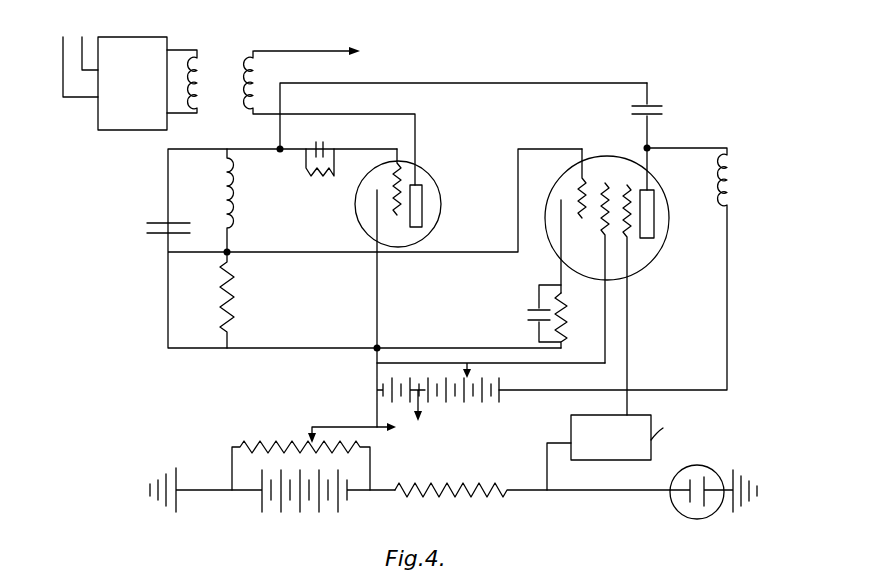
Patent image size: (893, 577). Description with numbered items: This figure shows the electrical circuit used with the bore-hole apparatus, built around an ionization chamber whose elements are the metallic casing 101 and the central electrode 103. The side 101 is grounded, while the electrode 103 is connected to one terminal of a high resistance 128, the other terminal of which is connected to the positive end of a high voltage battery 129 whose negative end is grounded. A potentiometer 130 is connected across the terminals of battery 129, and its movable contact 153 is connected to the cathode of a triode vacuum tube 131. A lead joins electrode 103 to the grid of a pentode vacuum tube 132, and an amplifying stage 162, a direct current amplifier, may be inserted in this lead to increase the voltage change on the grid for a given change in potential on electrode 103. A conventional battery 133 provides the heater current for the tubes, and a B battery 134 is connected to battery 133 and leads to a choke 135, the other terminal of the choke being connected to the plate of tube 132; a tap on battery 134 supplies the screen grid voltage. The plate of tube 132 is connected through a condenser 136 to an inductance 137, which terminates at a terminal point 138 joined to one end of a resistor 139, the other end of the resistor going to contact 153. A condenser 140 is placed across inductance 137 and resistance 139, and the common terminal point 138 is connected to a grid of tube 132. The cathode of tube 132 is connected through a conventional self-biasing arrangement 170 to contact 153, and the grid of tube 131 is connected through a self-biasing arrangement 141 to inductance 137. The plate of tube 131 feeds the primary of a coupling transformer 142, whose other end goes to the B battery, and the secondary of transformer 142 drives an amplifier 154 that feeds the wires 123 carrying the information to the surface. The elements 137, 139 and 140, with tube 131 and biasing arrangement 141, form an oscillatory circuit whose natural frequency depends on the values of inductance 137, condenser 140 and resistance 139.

The wires 123 is at (78, 51).
The amplifier 154 is at (147, 83).
The coupling transformer 142 is at (311, 108).
The self-biasing arrangement 141 is at (319, 148).
The triode vacuum tube 131 is at (413, 176).
The condenser 136 is at (662, 136).
The pentode vacuum tube 132 is at (607, 273).
The choke 135 is at (637, 269).
The condenser 140 is at (154, 217).
The inductance 137 is at (252, 200).
The terminal point 138 is at (231, 249).
The resistor 139 is at (249, 300).
The self-biasing arrangement 170 is at (566, 316).
The battery 133 is at (393, 378).
The B battery 134 is at (491, 397).
The movable contact 153 is at (310, 428).
The potentiometer 130 is at (242, 446).
The high voltage battery 129 is at (272, 500).
The high resistance 128 is at (532, 503).
The amplifying stage 162 is at (642, 452).
The metallic casing 101 is at (708, 484).
The central electrode 103 is at (678, 499).